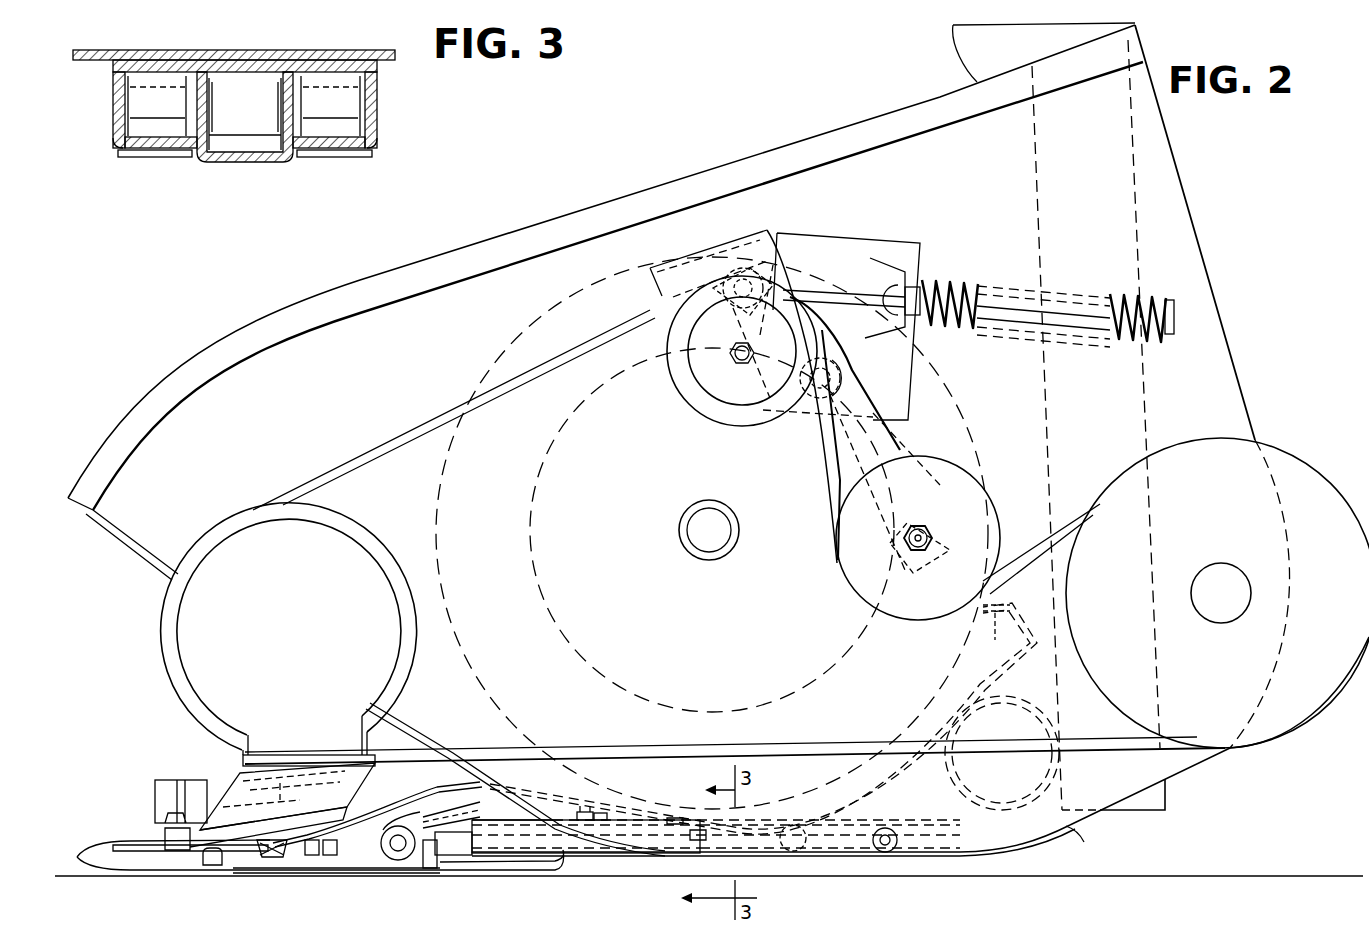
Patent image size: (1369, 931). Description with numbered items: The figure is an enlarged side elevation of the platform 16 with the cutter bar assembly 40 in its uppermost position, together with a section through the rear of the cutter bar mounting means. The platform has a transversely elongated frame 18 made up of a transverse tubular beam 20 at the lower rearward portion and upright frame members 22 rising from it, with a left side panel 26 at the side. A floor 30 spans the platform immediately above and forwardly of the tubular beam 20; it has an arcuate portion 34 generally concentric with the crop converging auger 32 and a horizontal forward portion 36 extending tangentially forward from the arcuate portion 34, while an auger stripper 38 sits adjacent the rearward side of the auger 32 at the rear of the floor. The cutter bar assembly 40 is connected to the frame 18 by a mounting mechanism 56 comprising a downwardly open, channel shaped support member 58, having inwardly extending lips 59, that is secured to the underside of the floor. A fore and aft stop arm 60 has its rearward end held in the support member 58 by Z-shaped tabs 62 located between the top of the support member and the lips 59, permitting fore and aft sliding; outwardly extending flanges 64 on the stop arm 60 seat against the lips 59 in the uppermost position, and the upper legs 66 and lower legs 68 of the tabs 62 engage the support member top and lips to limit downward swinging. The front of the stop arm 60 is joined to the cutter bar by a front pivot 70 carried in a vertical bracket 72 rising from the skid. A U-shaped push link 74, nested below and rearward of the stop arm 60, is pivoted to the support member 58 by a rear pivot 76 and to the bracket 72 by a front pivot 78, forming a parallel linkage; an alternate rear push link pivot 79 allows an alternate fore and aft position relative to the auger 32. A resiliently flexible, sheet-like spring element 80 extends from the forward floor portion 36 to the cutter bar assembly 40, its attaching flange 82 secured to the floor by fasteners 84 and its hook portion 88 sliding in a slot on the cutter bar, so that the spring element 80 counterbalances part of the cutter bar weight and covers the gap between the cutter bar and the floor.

In FIG. 2, the platform 16 is at (1232, 296).
In FIG. 2, the frame 18 is at (1176, 794).
In FIG. 2, the transverse tubular beam 20 is at (1080, 841).
In FIG. 2, the upright frame members 22 is at (1148, 388).
In FIG. 2, the left side panel 26 is at (362, 335).
In FIG. 3, the floor 30 is at (76, 66).
In FIG. 2, the floor 30 is at (860, 796).
In FIG. 2, the crop converging auger 32 is at (432, 488).
In FIG. 2, the arcuate portion 34 is at (810, 803).
In FIG. 2, the horizontal forward portion 36 is at (502, 820).
In FIG. 2, the auger stripper 38 is at (993, 634).
In FIG. 2, the cutter bar assembly 40 is at (124, 833).
In FIG. 2, the mounting mechanism 56 is at (602, 868).
In FIG. 3, the support member 58 is at (368, 116).
In FIG. 3, the lips 59 is at (140, 144).
In FIG. 3, the stop arm 60 is at (257, 74).
In FIG. 2, the stop arm 60 is at (452, 805).
In FIG. 3, the Z-shaped tabs 62 is at (140, 106).
In FIG. 2, the Z-shaped tabs 62 is at (653, 830).
In FIG. 3, the flanges 64 is at (150, 158).
In FIG. 2, the upper legs 66 is at (697, 835).
In FIG. 2, the lower legs 68 is at (627, 857).
In FIG. 2, the front pivot 70 is at (281, 858).
In FIG. 2, the vertical bracket 72 is at (357, 858).
In FIG. 3, the push link 74 is at (243, 161).
In FIG. 2, the rear pivot 76 is at (888, 848).
In FIG. 2, the front pivot 78 is at (400, 848).
In FIG. 2, the alternate rear push link pivot 79 is at (810, 853).
In FIG. 2, the spring element 80 is at (437, 788).
In FIG. 2, the attaching flange 82 is at (603, 812).
In FIG. 2, the fasteners 84 is at (583, 808).
In FIG. 2, the hook portion 88 is at (240, 850).